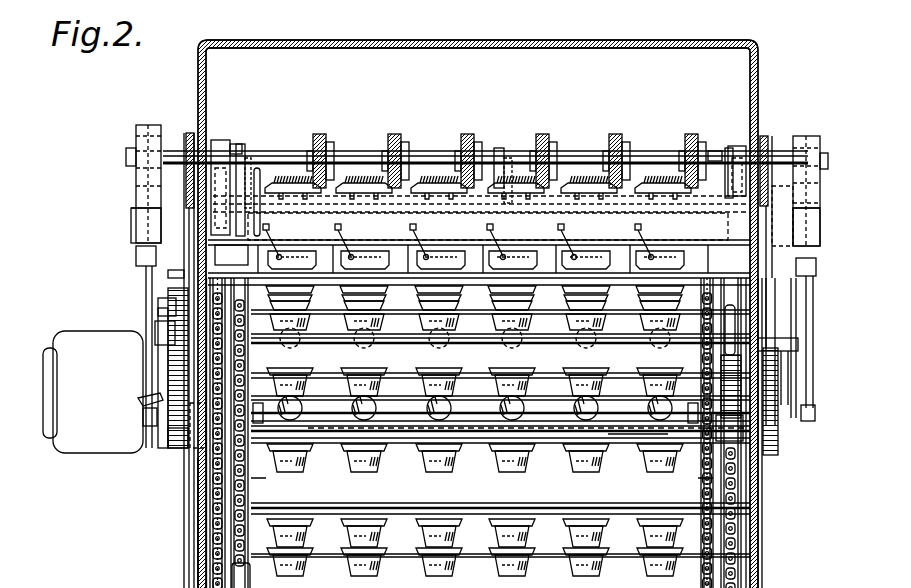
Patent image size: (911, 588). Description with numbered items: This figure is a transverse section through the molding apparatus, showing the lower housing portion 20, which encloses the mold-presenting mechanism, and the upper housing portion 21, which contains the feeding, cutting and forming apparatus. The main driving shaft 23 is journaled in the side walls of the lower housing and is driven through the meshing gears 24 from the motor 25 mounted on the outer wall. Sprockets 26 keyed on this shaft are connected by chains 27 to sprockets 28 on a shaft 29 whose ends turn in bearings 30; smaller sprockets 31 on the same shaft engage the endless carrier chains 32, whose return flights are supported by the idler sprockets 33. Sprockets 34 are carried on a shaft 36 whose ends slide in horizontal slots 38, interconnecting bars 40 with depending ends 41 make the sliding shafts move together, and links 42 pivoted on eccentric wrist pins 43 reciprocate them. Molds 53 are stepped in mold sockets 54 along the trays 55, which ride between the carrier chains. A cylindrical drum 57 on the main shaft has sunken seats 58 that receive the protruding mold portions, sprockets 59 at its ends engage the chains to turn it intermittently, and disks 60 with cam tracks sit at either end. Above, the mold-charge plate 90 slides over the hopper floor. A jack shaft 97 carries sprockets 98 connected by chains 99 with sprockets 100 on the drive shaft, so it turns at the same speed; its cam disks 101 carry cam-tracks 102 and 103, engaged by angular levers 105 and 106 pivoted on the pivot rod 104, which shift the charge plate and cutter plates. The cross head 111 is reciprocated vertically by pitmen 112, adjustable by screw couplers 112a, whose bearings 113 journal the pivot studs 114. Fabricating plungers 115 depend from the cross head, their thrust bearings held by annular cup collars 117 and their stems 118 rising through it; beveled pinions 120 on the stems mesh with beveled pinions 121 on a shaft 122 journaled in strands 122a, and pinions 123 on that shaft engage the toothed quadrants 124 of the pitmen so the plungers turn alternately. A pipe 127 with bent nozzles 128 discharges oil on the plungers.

The lower housing portion 20 is at (190, 540).
The upper housing portion 21 is at (448, 40).
The main driving shaft 23 is at (182, 415).
The meshing gears 24 is at (160, 345).
The motor 25 is at (66, 342).
The sprockets 26 is at (190, 450).
The chains 27 is at (190, 466).
The sprockets 28 is at (190, 482).
The shaft 29 is at (305, 495).
The bearings 30 is at (190, 500).
The smaller sprockets 31 is at (270, 470).
The endless carrier chains 32 is at (200, 286).
The idler sprockets 33 is at (244, 575).
The sprockets 34 is at (244, 340).
The shaft 36 is at (150, 313).
The horizontal slots 38 is at (150, 372).
The bars 40 is at (160, 300).
The depending ends 41 is at (475, 308).
The links 42 is at (135, 406).
The eccentric wrist pins 43 is at (130, 392).
The molds 53 is at (488, 340).
The mold sockets 54 is at (410, 452).
The trays 55 is at (515, 312).
The cylindrical drum 57 is at (618, 430).
The sunken seats 58 is at (352, 345).
The sprockets 59 is at (178, 268).
The disks 60 is at (290, 410).
The mold-charge plate 90 is at (534, 280).
The jack shaft 97 is at (310, 180).
The sprockets 98 is at (182, 125).
The chains 99 is at (178, 128).
The sprockets 100 is at (160, 432).
The cam disks 101 is at (236, 138).
The cam-track 102 is at (243, 152).
The cam-track 103 is at (230, 136).
The pivot rod 104 is at (405, 142).
The angular levers 105 is at (262, 205).
The angular levers 106 is at (420, 239).
The cross head 111 is at (783, 216).
The pitmen 112 is at (138, 260).
The screw couplers 112a is at (788, 259).
The bearings 113 is at (123, 218).
The pivot studs 114 is at (125, 200).
The fabricating plungers 115 is at (474, 265).
The annular cup collars 117 is at (478, 223).
The stems 118 is at (550, 261).
The beveled pinions 120 is at (304, 126).
The beveled pinions 121 is at (380, 126).
The shaft 122 is at (460, 126).
The strands 122a is at (210, 132).
The pinions 123 is at (128, 144).
The quadrants 124 is at (128, 166).
The pipe 127 is at (612, 180).
The bent nozzles 128 is at (266, 237).